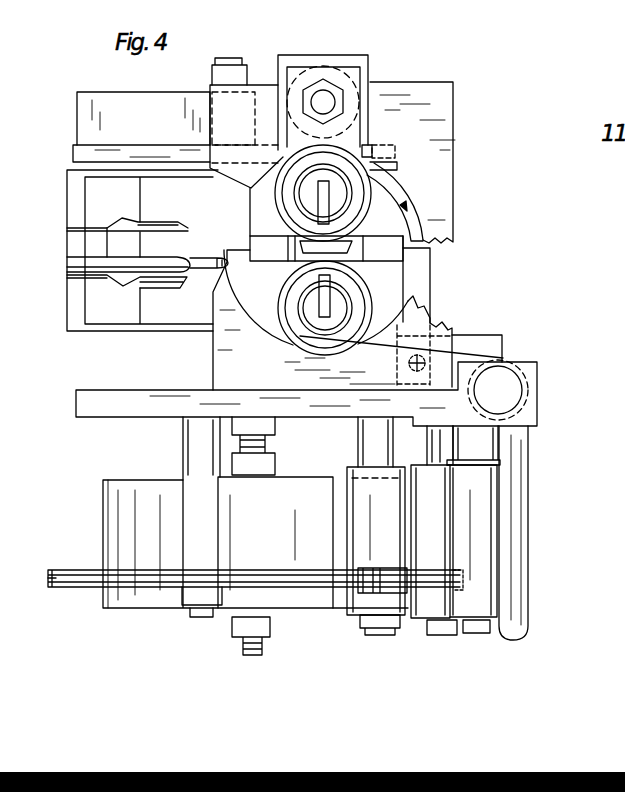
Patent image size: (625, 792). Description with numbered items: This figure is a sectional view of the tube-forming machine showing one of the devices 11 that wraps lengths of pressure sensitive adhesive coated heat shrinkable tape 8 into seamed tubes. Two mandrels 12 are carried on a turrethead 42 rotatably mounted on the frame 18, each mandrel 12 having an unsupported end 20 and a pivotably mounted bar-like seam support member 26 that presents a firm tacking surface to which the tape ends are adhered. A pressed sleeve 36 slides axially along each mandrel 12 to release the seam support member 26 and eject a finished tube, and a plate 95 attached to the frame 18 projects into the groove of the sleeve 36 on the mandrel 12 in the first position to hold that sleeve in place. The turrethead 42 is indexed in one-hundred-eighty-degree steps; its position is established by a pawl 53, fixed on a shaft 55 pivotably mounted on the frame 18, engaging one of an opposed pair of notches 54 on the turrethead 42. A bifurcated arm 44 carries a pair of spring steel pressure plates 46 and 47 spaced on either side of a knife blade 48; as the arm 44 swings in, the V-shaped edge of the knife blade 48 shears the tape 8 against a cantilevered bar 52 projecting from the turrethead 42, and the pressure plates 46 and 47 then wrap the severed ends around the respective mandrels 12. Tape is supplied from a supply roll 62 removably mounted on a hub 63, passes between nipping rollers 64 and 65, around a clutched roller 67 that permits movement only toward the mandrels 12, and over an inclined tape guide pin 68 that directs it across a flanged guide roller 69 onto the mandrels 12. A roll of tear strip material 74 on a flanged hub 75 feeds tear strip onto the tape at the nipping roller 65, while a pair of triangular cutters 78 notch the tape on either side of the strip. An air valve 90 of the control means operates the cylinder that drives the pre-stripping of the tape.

The tape 8 is at (390, 352).
The device 11 is at (348, 140).
The mandrel 12 is at (314, 159).
The frame 18 is at (78, 153).
The unsupported end 20 is at (352, 176).
The seam support member 26 is at (328, 197).
The sleeve 36 is at (262, 190).
The turrethead 42 is at (415, 231).
The bifurcated arm 44 is at (159, 175).
The pressure plate 46 is at (162, 224).
The pressure plate 47 is at (169, 285).
The knife blade 48 is at (157, 265).
The cantilevered bar 52 is at (300, 250).
The pawl 53 is at (430, 320).
The notch 54 is at (250, 211).
The shaft 55 is at (421, 371).
The supply roll 62 is at (105, 500).
The hub 63 is at (257, 538).
The nipping roller 64 is at (423, 612).
The nipping roller 65 is at (357, 613).
The clutched roller 67 is at (462, 607).
The tape guide pin 68 is at (512, 504).
The guide roller 69 is at (500, 360).
The tear strip material 74 is at (85, 571).
The flanged hub 75 is at (75, 588).
The cutter 78 is at (388, 573).
The air valve 90 is at (166, 134).
The plate 95 is at (212, 100).